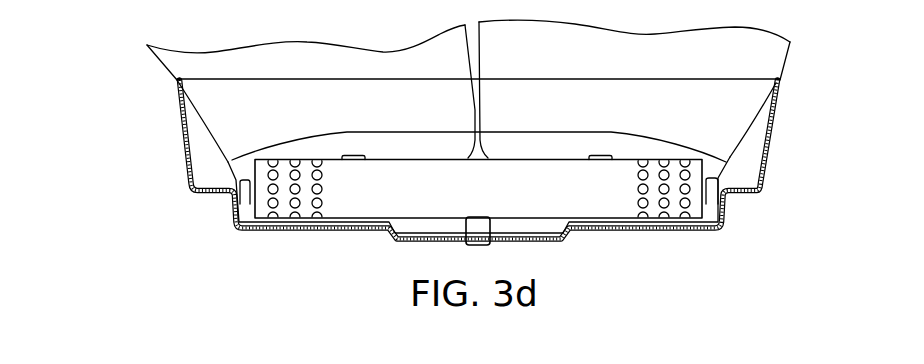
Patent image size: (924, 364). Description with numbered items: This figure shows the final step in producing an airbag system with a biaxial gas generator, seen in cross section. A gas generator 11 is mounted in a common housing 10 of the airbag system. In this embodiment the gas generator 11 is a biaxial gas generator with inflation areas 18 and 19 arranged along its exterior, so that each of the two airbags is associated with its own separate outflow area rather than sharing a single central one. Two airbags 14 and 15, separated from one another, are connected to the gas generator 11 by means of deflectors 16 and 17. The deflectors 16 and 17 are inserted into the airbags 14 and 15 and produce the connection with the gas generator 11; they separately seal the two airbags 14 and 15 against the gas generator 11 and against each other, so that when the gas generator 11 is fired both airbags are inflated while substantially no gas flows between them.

The housing 10 is at (772, 133).
The gas generator 11 is at (580, 193).
The airbag 14 is at (233, 63).
The airbag 15 is at (740, 53).
The deflector 16 is at (371, 220).
The deflector 17 is at (525, 223).
The inflation area 18 is at (292, 193).
The inflation area 19 is at (667, 187).